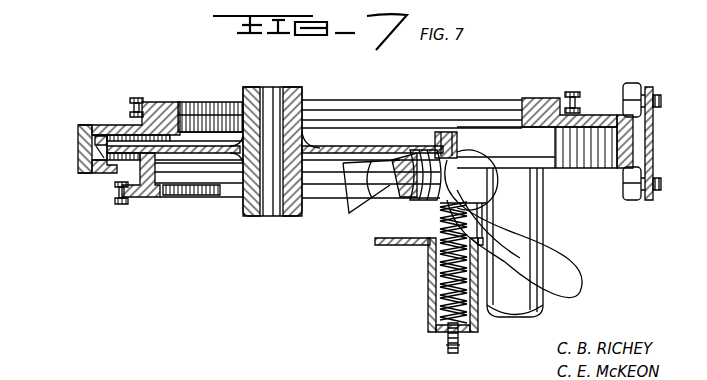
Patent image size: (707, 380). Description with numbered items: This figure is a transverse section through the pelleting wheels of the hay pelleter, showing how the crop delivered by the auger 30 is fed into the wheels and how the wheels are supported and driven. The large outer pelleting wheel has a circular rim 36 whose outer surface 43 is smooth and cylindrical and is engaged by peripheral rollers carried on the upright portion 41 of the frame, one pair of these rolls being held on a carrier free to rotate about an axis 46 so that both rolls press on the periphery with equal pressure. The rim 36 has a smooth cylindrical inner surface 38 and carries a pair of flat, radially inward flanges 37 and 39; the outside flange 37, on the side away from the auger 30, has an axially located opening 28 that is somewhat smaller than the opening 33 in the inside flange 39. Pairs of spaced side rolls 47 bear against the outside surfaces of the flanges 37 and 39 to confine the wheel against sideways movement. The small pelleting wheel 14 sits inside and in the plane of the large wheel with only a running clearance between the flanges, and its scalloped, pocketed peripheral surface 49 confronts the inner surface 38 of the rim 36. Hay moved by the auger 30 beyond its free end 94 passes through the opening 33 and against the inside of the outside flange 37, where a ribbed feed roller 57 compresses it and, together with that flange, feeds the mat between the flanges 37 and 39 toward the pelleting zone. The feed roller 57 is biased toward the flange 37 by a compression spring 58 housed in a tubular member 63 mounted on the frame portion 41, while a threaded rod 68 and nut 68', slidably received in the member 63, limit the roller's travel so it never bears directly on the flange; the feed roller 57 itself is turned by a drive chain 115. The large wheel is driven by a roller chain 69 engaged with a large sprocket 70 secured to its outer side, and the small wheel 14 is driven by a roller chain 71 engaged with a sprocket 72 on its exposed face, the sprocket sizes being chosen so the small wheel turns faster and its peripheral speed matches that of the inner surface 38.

The small pelleting wheel 14 is at (97, 133).
The opening 28 is at (477, 125).
The auger 30 is at (533, 229).
The opening 33 is at (587, 169).
The circular rim 36 is at (78, 128).
The outside flange 37 is at (110, 127).
The inner surface 38 is at (95, 168).
The inside flange 39 is at (110, 178).
The upright portion of the frame 41 is at (405, 246).
The outer surface 43 is at (78, 150).
The axis 46 is at (247, 212).
The side rolls 47 is at (633, 85).
The peripheral surface 49 is at (457, 140).
The feed roller 57 is at (438, 180).
The compression spring 58 is at (443, 297).
The tubular member 63 is at (478, 326).
The threaded rod 68 is at (484, 345).
The nut 68' is at (422, 356).
The roller chain 69 is at (580, 105).
The large sprocket 70 is at (528, 100).
The roller chain 71 is at (121, 204).
The sprocket 72 is at (150, 198).
The free end of the auger 94 is at (518, 170).
The drive chain 115 is at (400, 186).